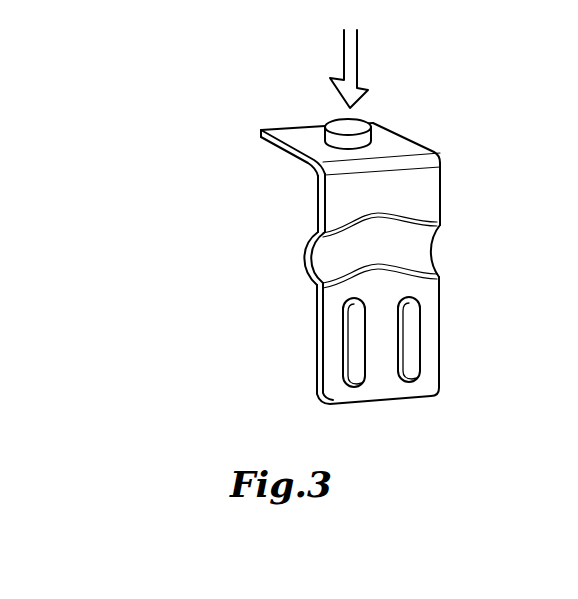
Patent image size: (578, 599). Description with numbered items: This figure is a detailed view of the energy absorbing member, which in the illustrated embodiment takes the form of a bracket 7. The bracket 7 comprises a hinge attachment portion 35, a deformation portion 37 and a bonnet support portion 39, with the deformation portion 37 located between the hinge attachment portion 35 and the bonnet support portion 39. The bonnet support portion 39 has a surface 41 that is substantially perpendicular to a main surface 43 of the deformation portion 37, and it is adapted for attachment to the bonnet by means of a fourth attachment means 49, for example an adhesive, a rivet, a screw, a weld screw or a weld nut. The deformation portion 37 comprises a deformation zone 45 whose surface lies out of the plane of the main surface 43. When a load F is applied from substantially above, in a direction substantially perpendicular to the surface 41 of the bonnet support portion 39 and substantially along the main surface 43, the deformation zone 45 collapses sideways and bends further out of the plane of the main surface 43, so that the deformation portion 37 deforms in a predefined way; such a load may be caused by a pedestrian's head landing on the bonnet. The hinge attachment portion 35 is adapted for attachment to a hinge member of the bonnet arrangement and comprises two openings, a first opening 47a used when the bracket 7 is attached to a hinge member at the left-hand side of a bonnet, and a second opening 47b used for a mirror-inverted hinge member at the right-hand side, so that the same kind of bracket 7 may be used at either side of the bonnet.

The bracket 7 is at (176, 97).
The hinge attachment portion 35 is at (369, 340).
The deformation portion 37 is at (454, 243).
The bonnet support portion 39 is at (386, 233).
The surface 41 is at (297, 133).
The main surface 43 is at (415, 188).
The deformation zone 45 is at (410, 253).
The first opening 47a is at (351, 356).
The second opening 47b is at (405, 342).
The fourth attachment means 49 is at (335, 122).
The load F is at (348, 53).